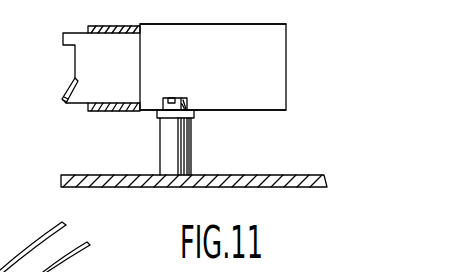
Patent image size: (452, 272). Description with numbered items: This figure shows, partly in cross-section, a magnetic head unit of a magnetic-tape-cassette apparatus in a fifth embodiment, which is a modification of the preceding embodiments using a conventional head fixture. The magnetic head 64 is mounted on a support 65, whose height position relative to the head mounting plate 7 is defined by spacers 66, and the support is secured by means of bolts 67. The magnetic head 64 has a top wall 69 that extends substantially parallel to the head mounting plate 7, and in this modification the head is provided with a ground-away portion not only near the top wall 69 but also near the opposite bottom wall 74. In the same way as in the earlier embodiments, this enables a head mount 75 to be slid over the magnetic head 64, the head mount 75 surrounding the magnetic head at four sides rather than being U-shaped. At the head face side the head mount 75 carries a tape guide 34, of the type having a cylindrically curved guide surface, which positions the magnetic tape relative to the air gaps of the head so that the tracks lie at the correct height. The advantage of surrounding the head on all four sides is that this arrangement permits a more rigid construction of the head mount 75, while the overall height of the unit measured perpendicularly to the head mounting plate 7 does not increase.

The head mounting plate 7 is at (264, 176).
The tape guide 34 is at (62, 100).
The magnetic head 64 is at (287, 71).
The support 65 is at (167, 116).
The spacer 66 is at (180, 146).
The bolt 67 is at (180, 98).
The top wall 69 is at (218, 24).
The bottom wall 74 is at (232, 110).
The head mount 75 is at (92, 118).